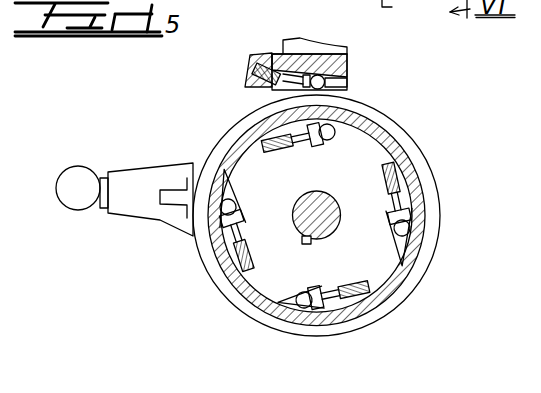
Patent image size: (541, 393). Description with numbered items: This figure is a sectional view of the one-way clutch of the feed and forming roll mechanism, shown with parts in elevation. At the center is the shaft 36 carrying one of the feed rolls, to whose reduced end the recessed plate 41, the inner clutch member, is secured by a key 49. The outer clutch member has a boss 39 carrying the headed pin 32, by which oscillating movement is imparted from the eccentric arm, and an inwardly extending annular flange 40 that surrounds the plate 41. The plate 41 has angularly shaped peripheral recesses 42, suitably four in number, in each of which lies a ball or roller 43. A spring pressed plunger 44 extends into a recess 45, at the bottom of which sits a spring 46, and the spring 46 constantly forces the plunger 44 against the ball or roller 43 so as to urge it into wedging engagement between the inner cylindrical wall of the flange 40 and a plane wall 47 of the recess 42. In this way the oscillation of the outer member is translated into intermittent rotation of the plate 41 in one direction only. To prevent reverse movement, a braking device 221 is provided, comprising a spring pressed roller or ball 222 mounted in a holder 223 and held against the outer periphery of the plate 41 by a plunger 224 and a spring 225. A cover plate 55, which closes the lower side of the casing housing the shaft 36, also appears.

The headed pin 32 is at (83, 170).
The boss 39 is at (147, 187).
The shaft 36 is at (327, 212).
The annular flange 40 is at (420, 210).
The recessed plate 41 is at (400, 270).
The peripheral recesses 42 is at (305, 293).
The ball or roller 43 is at (345, 110).
The spring pressed plunger 44 is at (305, 146).
The recess 45 is at (280, 153).
The spring 46 is at (273, 153).
The plane wall 47 is at (330, 135).
The key 49 is at (312, 244).
The cover plate 55 is at (406, 11).
The braking device 221 is at (272, 53).
The spring pressed roller or ball 222 is at (348, 73).
The holder 223 is at (340, 58).
The plunger 224 is at (290, 77).
The spring 225 is at (265, 90).